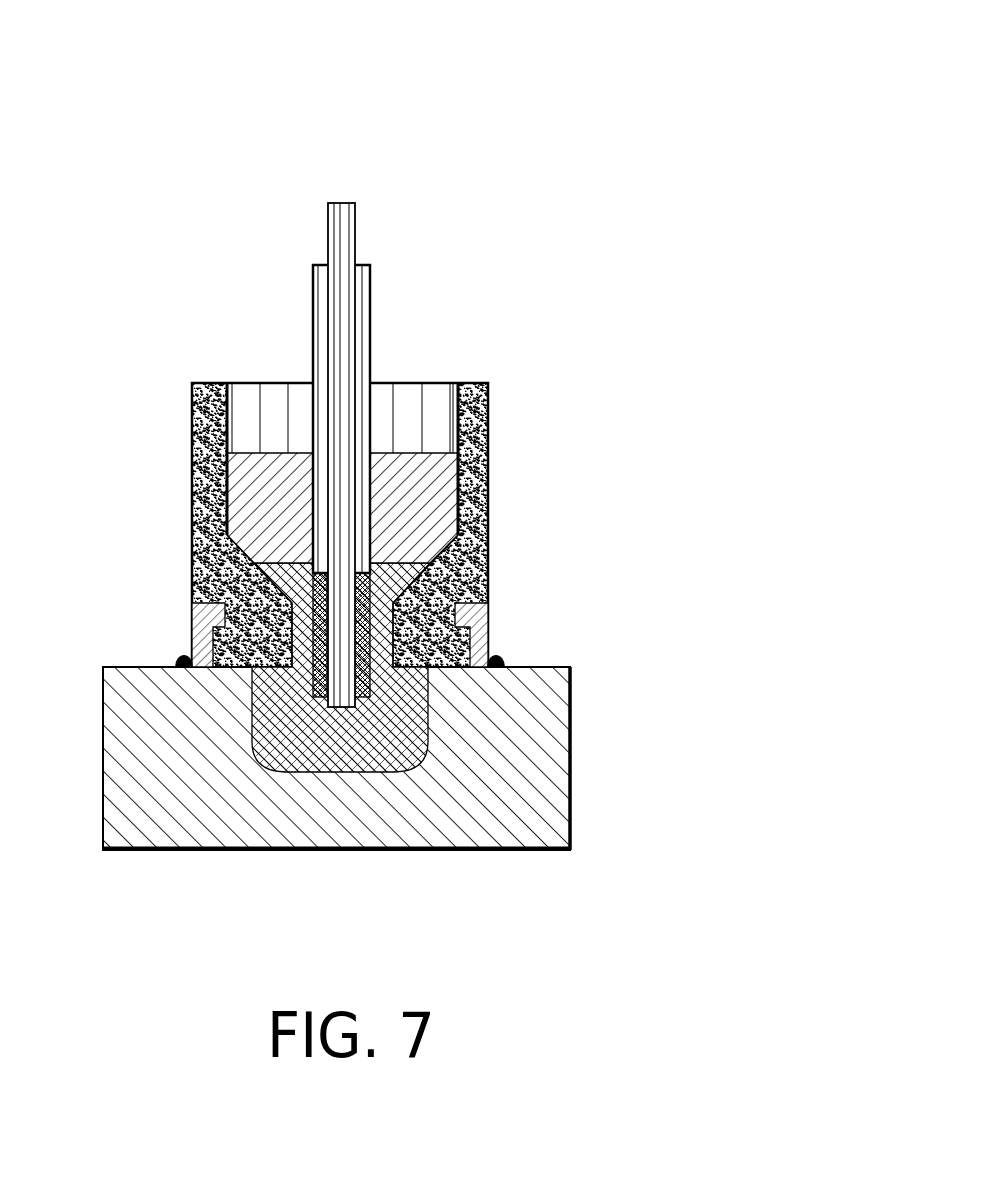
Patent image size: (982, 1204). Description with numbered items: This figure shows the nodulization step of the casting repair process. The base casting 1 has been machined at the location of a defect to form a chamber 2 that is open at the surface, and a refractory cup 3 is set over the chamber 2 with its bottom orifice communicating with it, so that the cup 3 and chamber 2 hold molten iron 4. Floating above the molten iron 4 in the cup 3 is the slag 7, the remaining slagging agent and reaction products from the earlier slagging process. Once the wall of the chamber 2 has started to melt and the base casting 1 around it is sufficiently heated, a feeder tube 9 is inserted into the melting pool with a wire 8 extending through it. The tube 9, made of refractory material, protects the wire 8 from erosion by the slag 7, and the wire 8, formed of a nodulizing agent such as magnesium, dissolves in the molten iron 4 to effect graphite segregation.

The base casting 1 is at (528, 800).
The chamber 2 is at (432, 715).
The cup 3 is at (492, 602).
The molten iron 4 is at (405, 563).
The slag 7 is at (486, 400).
The wire 8 is at (363, 210).
The feeder tube 9 is at (375, 328).